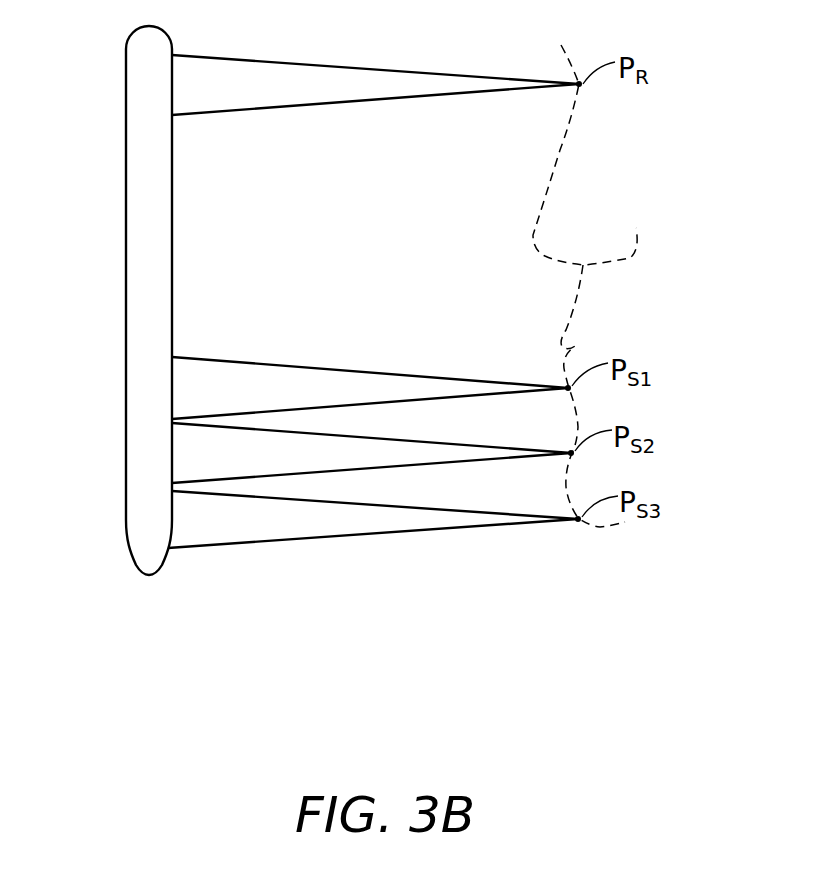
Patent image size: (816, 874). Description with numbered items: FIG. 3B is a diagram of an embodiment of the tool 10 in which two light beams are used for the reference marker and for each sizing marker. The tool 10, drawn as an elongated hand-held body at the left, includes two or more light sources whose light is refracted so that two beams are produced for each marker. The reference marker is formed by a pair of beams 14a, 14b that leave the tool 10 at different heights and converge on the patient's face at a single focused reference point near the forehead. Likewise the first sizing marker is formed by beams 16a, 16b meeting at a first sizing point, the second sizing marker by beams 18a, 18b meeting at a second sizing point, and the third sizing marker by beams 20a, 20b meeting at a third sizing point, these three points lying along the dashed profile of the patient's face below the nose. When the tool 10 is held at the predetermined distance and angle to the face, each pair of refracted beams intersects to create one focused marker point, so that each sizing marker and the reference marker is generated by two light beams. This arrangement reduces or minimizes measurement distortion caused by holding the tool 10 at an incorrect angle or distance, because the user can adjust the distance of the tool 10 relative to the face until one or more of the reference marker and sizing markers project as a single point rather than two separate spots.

The tool 10 is at (126, 370).
The reference marker beam 14a is at (284, 61).
The reference marker beam 14b is at (372, 104).
The sizing marker beam 16a is at (388, 373).
The sizing marker beam 16b is at (482, 398).
The sizing marker beam 18a is at (388, 438).
The sizing marker beam 18b is at (482, 463).
The sizing marker beam 20a is at (388, 504).
The sizing marker beam 20b is at (482, 528).